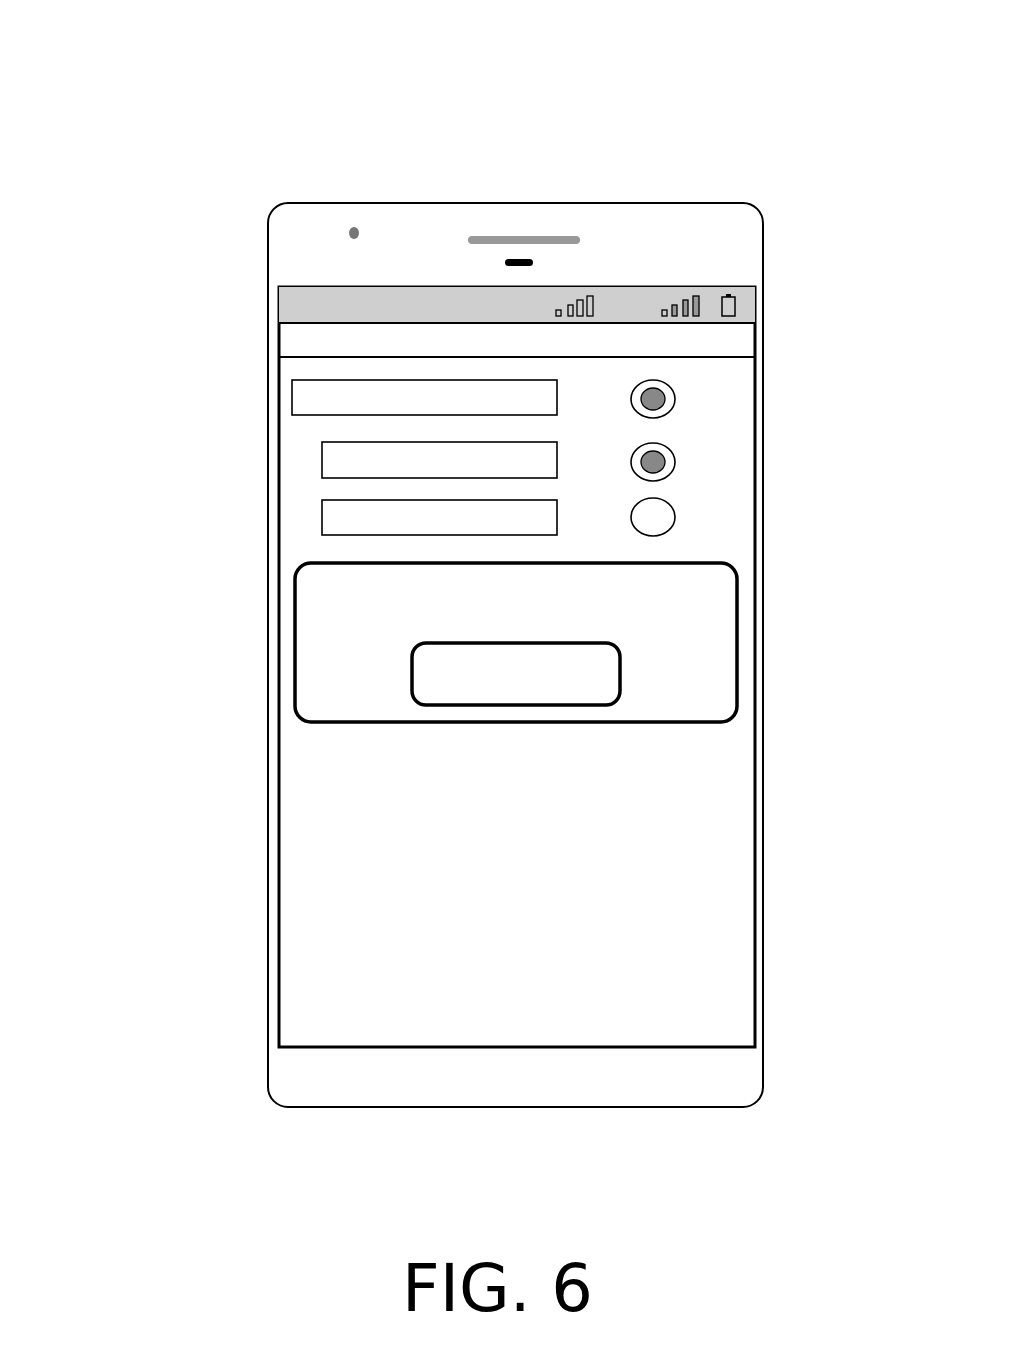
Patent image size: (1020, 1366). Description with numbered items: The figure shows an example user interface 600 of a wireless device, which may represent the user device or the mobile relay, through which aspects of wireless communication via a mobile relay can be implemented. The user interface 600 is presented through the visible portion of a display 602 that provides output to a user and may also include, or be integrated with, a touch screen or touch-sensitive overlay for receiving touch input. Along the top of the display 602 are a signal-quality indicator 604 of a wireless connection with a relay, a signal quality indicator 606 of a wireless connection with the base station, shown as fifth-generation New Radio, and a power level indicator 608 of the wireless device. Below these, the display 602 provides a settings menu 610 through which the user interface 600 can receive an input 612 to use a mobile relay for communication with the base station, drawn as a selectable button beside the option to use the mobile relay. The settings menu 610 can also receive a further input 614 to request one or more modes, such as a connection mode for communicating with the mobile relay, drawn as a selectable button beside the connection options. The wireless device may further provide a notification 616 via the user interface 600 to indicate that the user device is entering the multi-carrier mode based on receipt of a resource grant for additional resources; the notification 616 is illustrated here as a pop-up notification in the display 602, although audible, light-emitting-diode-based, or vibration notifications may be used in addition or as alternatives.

The user interface 600 is at (150, 50).
The display 602 is at (279, 693).
The signal-quality indicator 604 is at (604, 287).
The signal quality indicator 606 is at (708, 287).
The power level indicator 608 is at (740, 315).
The settings menu 610 is at (282, 336).
The input 612 is at (668, 394).
The further input 614 is at (668, 459).
The notification 616 is at (683, 626).